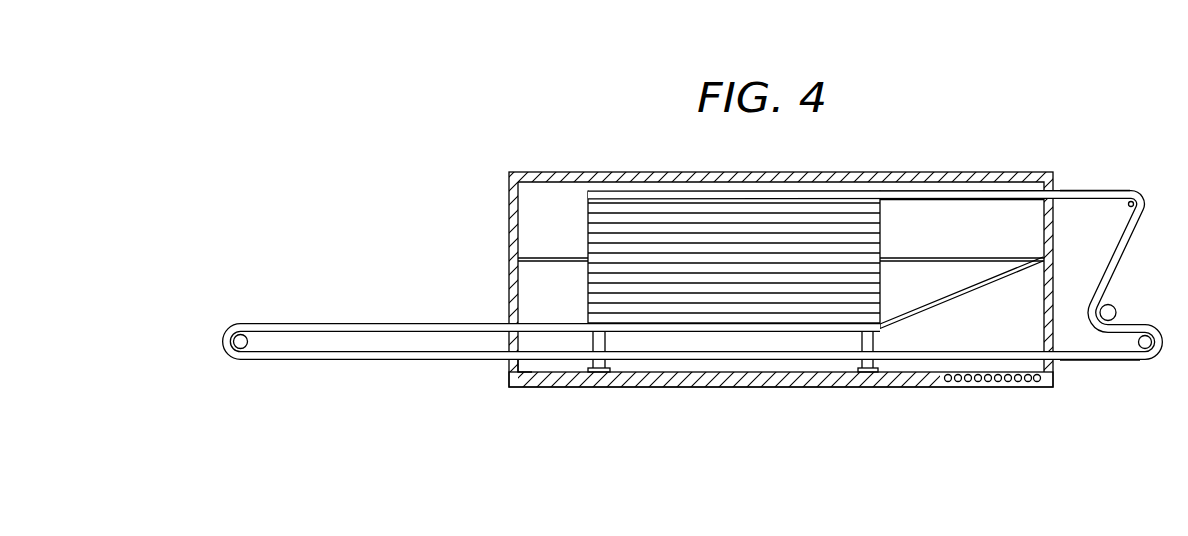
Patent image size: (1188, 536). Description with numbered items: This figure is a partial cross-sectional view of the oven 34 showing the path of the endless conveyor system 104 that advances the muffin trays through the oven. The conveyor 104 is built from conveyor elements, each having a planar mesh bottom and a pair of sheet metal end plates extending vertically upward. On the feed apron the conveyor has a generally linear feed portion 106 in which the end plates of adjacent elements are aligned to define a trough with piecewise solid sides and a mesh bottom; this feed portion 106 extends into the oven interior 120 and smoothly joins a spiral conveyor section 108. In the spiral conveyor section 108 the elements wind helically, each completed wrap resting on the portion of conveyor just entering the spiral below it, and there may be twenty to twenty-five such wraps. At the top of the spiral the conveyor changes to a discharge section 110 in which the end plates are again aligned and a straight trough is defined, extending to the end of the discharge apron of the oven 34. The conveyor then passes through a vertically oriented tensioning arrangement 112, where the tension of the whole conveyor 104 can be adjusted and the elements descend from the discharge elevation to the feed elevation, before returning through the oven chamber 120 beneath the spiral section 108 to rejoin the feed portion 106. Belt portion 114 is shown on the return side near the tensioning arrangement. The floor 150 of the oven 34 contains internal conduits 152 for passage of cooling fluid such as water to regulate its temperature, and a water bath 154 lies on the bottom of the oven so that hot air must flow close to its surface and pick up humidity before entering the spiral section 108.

The oven 34 is at (948, 168).
The endless conveyor system 104 is at (370, 315).
The linear feed portion 106 is at (306, 323).
The spiral conveyor section 108 is at (603, 227).
The discharge section 110 is at (1090, 190).
The tensioning arrangement 112 is at (1114, 309).
The belt 114 is at (1090, 361).
The oven interior 120 is at (532, 232).
The floor 150 is at (676, 383).
The internal conduits 152 is at (958, 383).
The water bath 154 is at (511, 375).